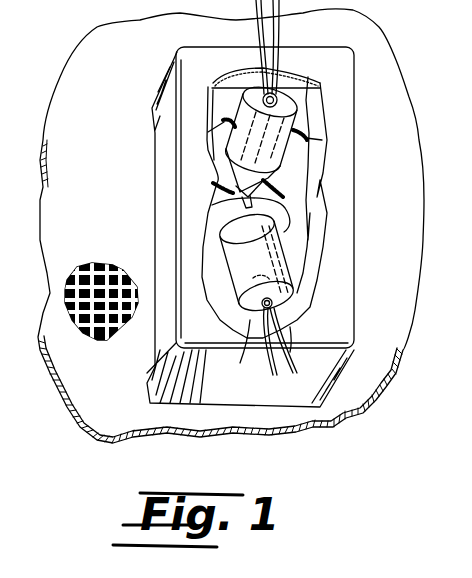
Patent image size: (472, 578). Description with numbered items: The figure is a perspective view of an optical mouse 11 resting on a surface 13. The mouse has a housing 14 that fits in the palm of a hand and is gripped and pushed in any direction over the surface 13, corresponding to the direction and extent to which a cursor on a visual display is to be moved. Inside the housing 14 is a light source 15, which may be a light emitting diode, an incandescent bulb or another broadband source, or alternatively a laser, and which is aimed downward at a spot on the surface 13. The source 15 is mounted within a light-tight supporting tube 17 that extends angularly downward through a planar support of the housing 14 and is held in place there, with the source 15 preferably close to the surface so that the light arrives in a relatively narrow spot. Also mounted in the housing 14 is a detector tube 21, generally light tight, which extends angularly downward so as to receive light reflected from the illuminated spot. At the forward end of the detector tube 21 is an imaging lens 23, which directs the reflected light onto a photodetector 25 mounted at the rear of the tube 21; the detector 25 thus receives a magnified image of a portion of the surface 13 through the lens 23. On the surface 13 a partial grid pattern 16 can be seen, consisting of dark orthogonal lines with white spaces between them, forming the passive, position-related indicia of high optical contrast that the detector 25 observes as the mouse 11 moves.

The optical mouse 11 is at (384, 136).
The surface 13 is at (77, 213).
The housing 14 is at (346, 70).
The light source 15 is at (240, 198).
The partial grid pattern 16 is at (123, 267).
The supporting tube 17 is at (291, 142).
The detector tube 21 is at (279, 272).
The imaging lens 23 is at (262, 196).
The photodetector 25 is at (262, 353).